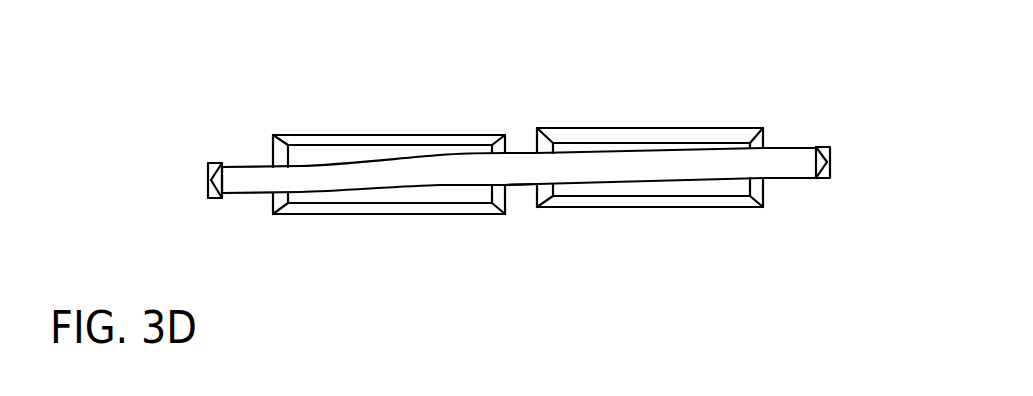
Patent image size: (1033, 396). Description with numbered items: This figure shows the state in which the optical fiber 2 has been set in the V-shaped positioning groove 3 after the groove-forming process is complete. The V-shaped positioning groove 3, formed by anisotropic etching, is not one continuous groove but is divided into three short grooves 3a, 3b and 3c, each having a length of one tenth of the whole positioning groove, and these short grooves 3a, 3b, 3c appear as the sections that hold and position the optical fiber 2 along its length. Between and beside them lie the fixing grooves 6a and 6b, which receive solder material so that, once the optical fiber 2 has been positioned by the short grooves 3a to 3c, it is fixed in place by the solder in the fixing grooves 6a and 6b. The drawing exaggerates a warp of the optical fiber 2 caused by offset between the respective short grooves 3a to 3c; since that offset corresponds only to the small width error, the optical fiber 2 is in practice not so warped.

The optical fiber 2 is at (796, 170).
The V-shaped positioning groove 3 is at (549, 172).
The short groove 3a is at (833, 163).
The short groove 3b is at (522, 187).
The short groove 3c is at (243, 198).
The fixing groove 6a is at (710, 185).
The fixing groove 6b is at (440, 208).